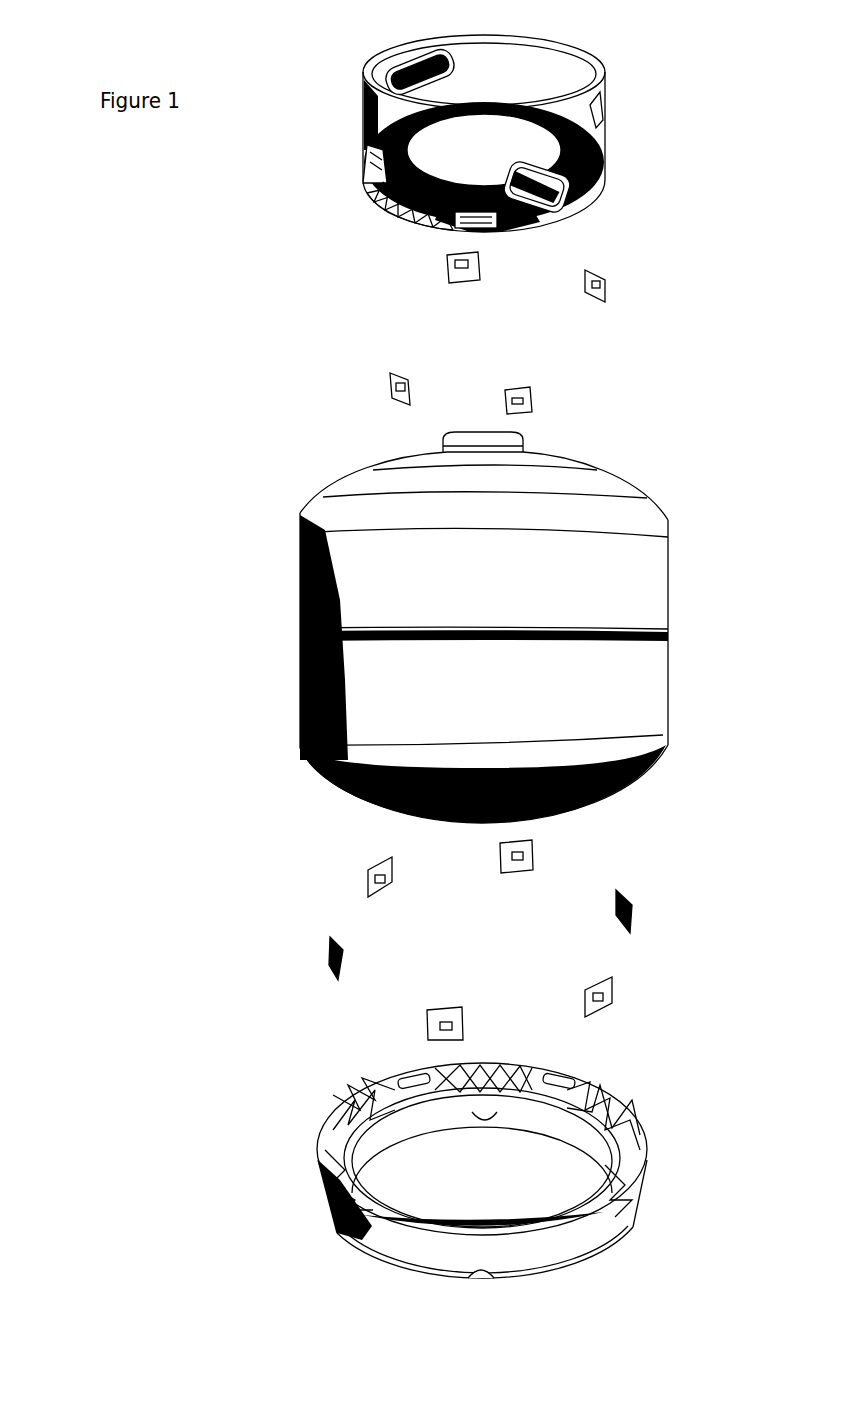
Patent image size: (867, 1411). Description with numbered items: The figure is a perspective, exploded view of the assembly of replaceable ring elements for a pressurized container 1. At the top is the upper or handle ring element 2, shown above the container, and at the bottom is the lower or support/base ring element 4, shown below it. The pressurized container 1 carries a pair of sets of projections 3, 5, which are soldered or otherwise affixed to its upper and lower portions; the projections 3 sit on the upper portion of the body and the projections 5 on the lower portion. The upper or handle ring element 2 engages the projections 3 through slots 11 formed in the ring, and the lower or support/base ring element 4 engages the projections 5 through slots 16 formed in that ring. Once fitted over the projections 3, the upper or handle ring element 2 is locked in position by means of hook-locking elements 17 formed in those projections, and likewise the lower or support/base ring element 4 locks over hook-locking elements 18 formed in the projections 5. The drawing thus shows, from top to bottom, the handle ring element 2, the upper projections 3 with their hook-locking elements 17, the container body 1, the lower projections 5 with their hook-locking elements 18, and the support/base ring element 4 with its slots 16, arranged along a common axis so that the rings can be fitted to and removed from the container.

The pressurized container 1 is at (300, 598).
The upper or handle ring element 2 is at (375, 70).
The projections 3 is at (458, 270).
The lower or support/base ring element 4 is at (323, 1200).
The projections 5 is at (427, 1012).
The slots 11 is at (462, 223).
The slots 16 is at (398, 1090).
The hook-locking elements 17 is at (404, 382).
The hook-locking elements 18 is at (590, 995).